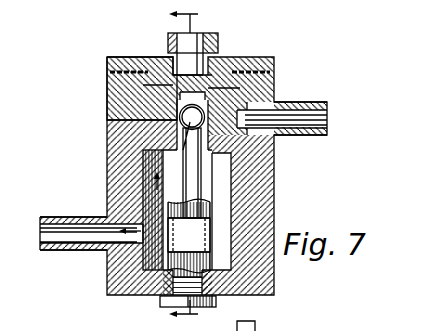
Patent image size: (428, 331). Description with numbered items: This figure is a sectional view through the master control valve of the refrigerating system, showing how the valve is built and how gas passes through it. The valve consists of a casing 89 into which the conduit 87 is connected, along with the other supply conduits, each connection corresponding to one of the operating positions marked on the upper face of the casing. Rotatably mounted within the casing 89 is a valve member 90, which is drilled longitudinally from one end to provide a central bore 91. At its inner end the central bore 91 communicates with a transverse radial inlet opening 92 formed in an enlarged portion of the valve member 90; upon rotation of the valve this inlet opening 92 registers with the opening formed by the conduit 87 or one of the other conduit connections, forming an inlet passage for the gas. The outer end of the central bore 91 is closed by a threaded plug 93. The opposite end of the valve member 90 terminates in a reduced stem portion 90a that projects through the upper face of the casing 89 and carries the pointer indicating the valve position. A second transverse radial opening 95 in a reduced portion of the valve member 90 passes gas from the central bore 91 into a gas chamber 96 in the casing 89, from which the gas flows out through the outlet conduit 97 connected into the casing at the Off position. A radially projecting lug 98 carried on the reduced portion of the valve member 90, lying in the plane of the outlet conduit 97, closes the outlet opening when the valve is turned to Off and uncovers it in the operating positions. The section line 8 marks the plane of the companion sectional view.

The section line 8- 8 is at (169, 169).
The conduit 87 is at (309, 102).
The casing 89 is at (268, 183).
The valve member 90 is at (160, 125).
The reduced stem portion 90a is at (214, 54).
The central bore 91 is at (196, 171).
The transverse radial inlet opening 92 is at (183, 113).
The threaded plug 93 is at (210, 308).
The second transverse radial opening 95 is at (160, 173).
The gas chamber 96 is at (165, 212).
The outlet conduit 97 is at (80, 250).
The radially projecting lug 98 is at (168, 247).